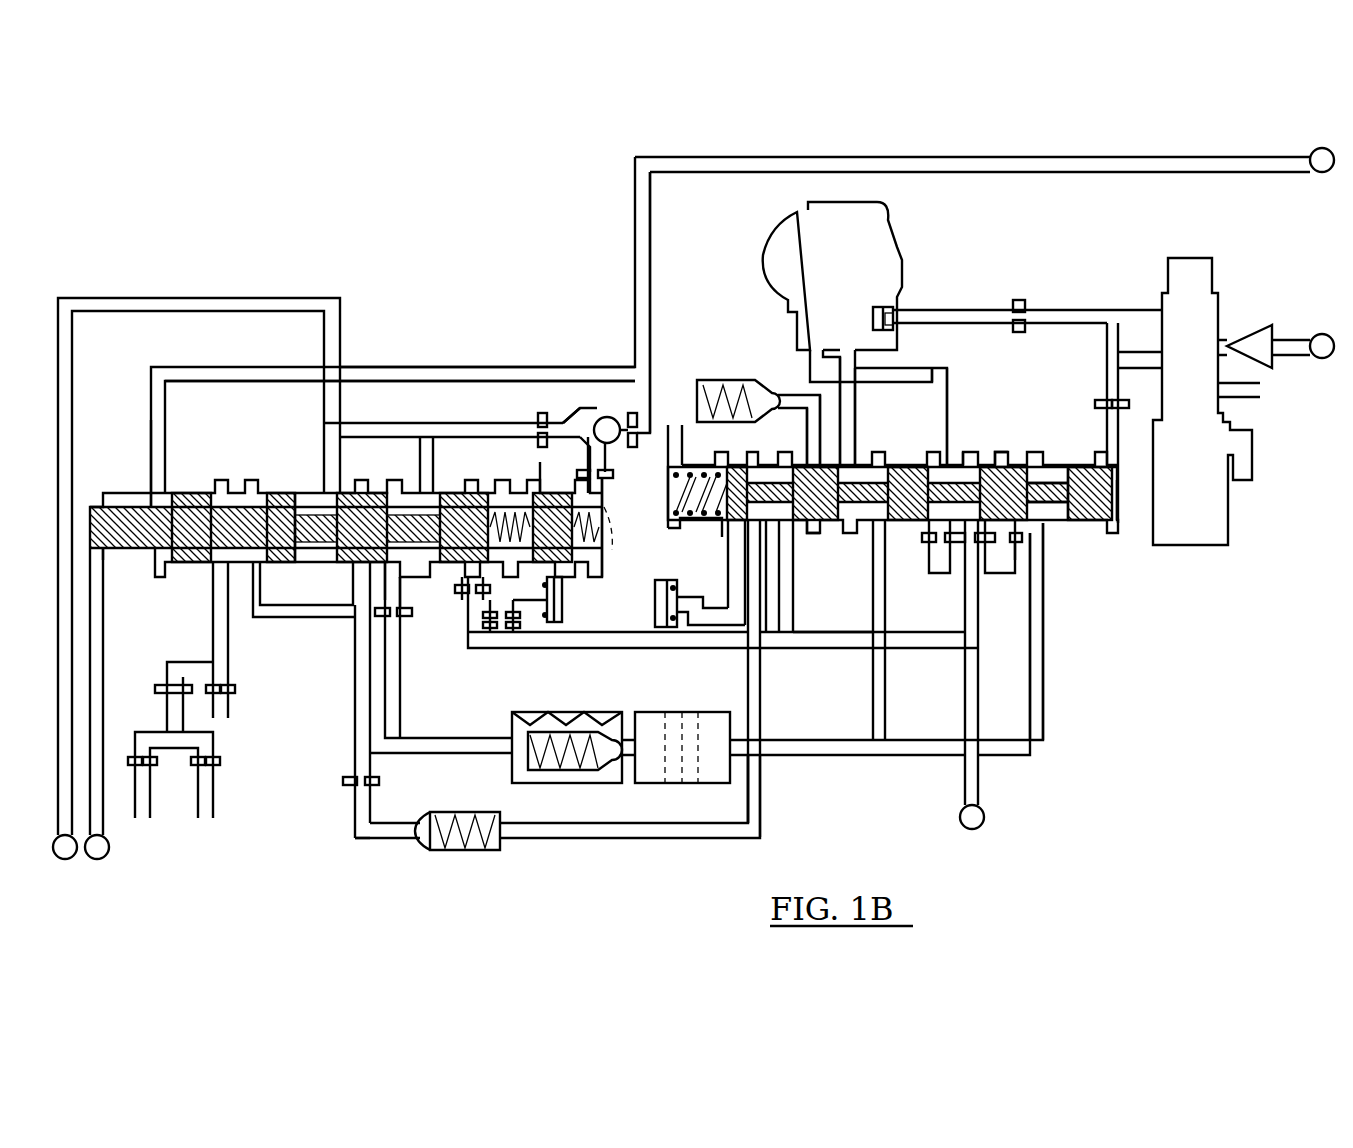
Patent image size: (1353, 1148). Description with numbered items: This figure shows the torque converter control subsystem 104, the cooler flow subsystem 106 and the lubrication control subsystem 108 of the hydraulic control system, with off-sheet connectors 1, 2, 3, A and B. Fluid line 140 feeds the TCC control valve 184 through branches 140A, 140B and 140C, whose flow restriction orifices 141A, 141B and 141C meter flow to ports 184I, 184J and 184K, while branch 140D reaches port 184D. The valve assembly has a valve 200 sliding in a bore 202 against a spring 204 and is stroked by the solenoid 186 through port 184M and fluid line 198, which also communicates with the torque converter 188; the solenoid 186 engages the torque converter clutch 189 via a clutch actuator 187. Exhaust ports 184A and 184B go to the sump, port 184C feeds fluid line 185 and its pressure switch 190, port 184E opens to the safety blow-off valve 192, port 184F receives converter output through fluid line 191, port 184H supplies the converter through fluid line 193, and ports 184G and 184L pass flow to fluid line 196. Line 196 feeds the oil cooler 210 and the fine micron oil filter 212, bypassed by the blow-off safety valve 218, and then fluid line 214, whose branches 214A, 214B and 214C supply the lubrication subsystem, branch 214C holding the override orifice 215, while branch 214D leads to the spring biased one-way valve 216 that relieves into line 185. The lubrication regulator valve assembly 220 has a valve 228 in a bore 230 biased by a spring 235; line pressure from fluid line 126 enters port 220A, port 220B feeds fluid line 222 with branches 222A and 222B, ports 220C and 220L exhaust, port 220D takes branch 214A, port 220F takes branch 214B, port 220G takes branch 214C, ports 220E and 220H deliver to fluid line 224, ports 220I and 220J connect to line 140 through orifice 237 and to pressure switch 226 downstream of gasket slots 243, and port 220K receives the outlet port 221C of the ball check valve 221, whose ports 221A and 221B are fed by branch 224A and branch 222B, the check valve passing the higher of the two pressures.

The torque converter control subsystem 104 is at (935, 297).
The cooler flow subsystem 106 is at (765, 808).
The lubrication control subsystem 108 is at (425, 358).
The fluid line 126 is at (105, 675).
The fluid line 140 is at (600, 648).
The branch of fluid line 140A is at (953, 558).
The branch of fluid line 140B is at (1012, 590).
The branch of fluid line 140C is at (1025, 555).
The branch of fluid line 140D is at (798, 610).
The flow restriction orifice 141A is at (927, 555).
The flow restriction orifice 141B is at (988, 550).
The flow restriction orifice 141C is at (1030, 540).
The TCC control valve assembly 184 is at (1058, 398).
The exhaust port 184A is at (675, 429).
The exhaust port 184B is at (722, 537).
The port 184C is at (750, 555).
The port 184D is at (750, 643).
The port 184E is at (808, 437).
The port 184F is at (860, 425).
The port 184G is at (872, 530).
The port 184H is at (947, 458).
The port 184I is at (857, 462).
The port 184J is at (970, 463).
The port 184K is at (996, 463).
The port 184L is at (1067, 478).
The port 184M is at (1118, 523).
The fluid line 185 is at (593, 840).
The solenoid 186 is at (1218, 272).
The clutch actuator 187 is at (881, 307).
The torque converter 188 is at (767, 238).
The torque converter clutch 189 is at (871, 312).
The TCC control valve pressure switch 190 is at (653, 620).
The fluid line 191 is at (890, 402).
The safety blow-off valve 192 is at (728, 380).
The fluid line 193 is at (935, 370).
The fluid line 196 is at (825, 755).
The fluid line 198 is at (1031, 303).
The valve 200 is at (1034, 483).
The bore 202 is at (850, 525).
The spring 204 is at (610, 475).
The oil cooler 210 is at (662, 783).
The fine micron oil filter 212 is at (552, 783).
The fluid line 214 is at (448, 757).
The branch of fluid line 214A is at (270, 625).
The branch of fluid line 214B is at (348, 600).
The branch of fluid line 214C is at (365, 682).
The branch of fluid line 214D is at (355, 836).
The override orifice 215 is at (405, 618).
The one-way valve 216 is at (465, 852).
The blow-off safety valve 218 is at (528, 758).
The lubrication regulator valve assembly 220 is at (151, 366).
The port 220A is at (103, 557).
The port 220B is at (155, 473).
The exhaust port 220C is at (213, 568).
The port 220D is at (228, 567).
The port 220E is at (328, 455).
The port 220F is at (306, 505).
The port 220G is at (375, 618).
The port 220H is at (426, 487).
The port 220I is at (463, 669).
The port 220J is at (512, 625).
The port 220K is at (606, 505).
The exhaust port 220L is at (538, 488).
The ball check valve 221 is at (596, 417).
The port 221A is at (561, 414).
The port 221B is at (638, 417).
The outlet port 221C is at (568, 408).
The fluid line 222 is at (490, 365).
The branch of fluid line 222A is at (686, 157).
The branch of fluid line 222B is at (648, 343).
The fluid line 224 is at (166, 298).
The branch of fluid line 224A is at (475, 435).
The pressure switch 226 is at (565, 605).
The valve 228 is at (125, 507).
The bore 230 is at (188, 492).
The spring 235 is at (606, 558).
The flow restriction orifice 237 is at (460, 603).
The gasket slots 243 is at (535, 625).
The connection point 1 is at (65, 847).
The connection point 2 is at (97, 703).
The connection point 3 is at (982, 770).
The connection point A is at (1322, 160).
The connection point B is at (1276, 346).